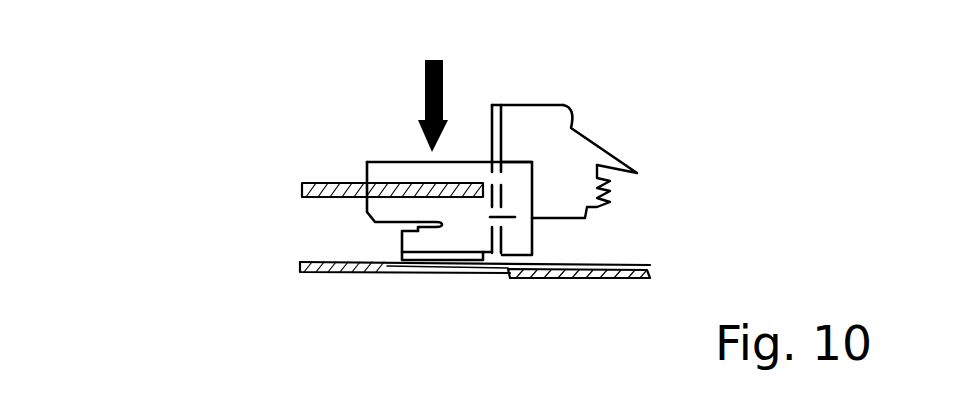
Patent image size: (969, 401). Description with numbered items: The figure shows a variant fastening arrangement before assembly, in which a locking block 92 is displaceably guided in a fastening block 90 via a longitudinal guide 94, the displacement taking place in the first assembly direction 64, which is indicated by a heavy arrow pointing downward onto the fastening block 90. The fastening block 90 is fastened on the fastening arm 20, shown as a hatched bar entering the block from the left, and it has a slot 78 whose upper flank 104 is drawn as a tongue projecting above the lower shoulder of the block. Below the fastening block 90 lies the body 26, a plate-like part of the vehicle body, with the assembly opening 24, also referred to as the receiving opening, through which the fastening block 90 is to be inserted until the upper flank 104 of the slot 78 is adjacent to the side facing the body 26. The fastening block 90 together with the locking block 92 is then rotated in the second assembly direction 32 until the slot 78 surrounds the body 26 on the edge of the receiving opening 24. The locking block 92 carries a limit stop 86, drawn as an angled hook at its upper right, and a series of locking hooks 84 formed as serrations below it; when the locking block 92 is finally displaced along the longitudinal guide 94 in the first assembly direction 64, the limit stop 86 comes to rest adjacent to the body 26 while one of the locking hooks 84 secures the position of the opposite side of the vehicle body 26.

The fastening arm 20 is at (302, 183).
The assembly opening 24 is at (513, 275).
The body 26 is at (650, 262).
The second assembly direction 32 is at (256, 389).
The first assembly direction 64 is at (443, 77).
The slot 78 is at (400, 231).
The locking hooks 84 is at (607, 193).
The limit stop 86 is at (615, 158).
The fastening block 90 is at (385, 170).
The locking block 92 is at (542, 150).
The longitudinal guide 94 is at (494, 130).
The upper flank 104 is at (372, 227).